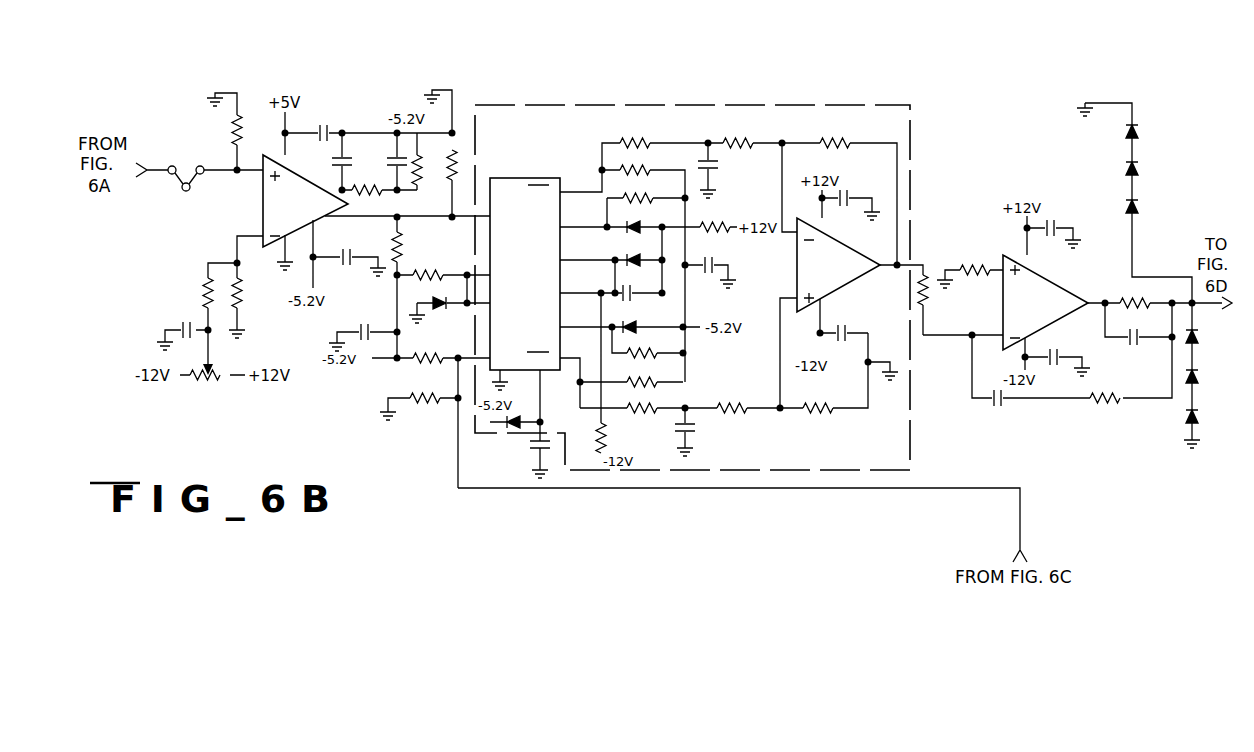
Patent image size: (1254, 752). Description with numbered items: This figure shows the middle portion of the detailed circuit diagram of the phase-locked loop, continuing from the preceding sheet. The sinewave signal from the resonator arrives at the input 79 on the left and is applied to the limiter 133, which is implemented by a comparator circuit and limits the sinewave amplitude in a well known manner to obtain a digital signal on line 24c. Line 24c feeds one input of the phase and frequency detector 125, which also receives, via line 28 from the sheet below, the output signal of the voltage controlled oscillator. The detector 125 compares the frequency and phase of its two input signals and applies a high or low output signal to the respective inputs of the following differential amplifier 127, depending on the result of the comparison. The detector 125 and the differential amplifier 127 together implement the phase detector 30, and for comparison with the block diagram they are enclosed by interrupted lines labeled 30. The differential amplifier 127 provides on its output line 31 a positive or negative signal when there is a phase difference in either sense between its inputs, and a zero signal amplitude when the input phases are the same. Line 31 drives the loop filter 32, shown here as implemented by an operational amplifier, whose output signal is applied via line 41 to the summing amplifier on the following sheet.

The input switch from FIG. 6A 79 is at (155, 165).
The limiter 133 is at (262, 201).
The line 24c is at (403, 222).
The phase and frequency detector 125 is at (528, 178).
The phase detector 30 is at (868, 112).
The differential amplifier 127 is at (833, 262).
The output line 31 is at (945, 335).
The loop filter 32 is at (1068, 297).
The line 41 is at (1200, 310).
The line 28 is at (958, 488).